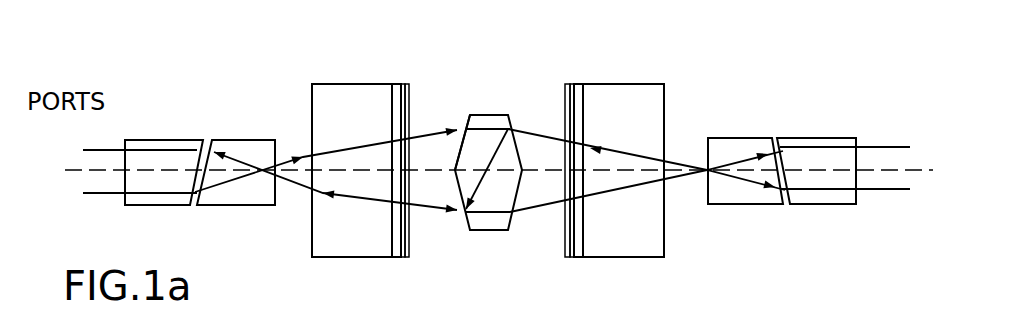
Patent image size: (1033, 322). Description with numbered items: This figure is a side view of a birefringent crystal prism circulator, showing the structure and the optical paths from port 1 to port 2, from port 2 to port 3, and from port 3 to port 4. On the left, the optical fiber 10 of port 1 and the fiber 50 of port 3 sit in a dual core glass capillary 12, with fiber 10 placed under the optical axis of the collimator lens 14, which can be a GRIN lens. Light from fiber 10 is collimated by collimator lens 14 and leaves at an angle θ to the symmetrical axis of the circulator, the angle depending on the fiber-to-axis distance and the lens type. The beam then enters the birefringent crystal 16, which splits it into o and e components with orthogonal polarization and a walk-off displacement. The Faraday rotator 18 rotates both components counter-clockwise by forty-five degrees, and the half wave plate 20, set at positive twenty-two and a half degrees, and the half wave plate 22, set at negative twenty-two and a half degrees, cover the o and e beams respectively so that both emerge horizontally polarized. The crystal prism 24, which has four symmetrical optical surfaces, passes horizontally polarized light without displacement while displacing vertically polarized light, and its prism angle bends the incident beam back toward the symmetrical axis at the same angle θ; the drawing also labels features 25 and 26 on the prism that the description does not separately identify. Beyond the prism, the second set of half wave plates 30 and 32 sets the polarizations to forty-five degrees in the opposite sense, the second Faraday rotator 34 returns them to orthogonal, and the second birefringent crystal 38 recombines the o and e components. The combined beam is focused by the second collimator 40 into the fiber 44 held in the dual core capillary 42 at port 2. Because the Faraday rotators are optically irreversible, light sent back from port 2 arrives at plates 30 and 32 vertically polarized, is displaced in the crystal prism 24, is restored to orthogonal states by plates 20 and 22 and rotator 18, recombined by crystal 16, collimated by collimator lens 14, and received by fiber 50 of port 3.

The port 1 is at (110, 196).
The port 2 is at (887, 222).
The port 3 is at (130, 150).
The port 4 is at (855, 142).
The optical fiber 10 is at (130, 194).
The dual core glass capillary 12 is at (177, 143).
The collimator lens 14 is at (262, 143).
The birefringent crystal 16 is at (364, 123).
The Faraday rotator 18 is at (397, 84).
The half wave plate 20 is at (406, 83).
The half wave plate 22 is at (444, 135).
The crystal prism 24 is at (484, 179).
The reflecting surface 25 is at (510, 128).
The prism input face 26 is at (460, 152).
The half wave plate 30 is at (565, 83).
The half wave plate 32 is at (610, 135).
The second Faraday rotator 34 is at (580, 83).
The second birefringent crystal 38 is at (636, 123).
The second collimator 40 is at (742, 138).
The dual core capillary 42 is at (833, 138).
The fiber 44 is at (855, 191).
The fiber 50 is at (168, 145).